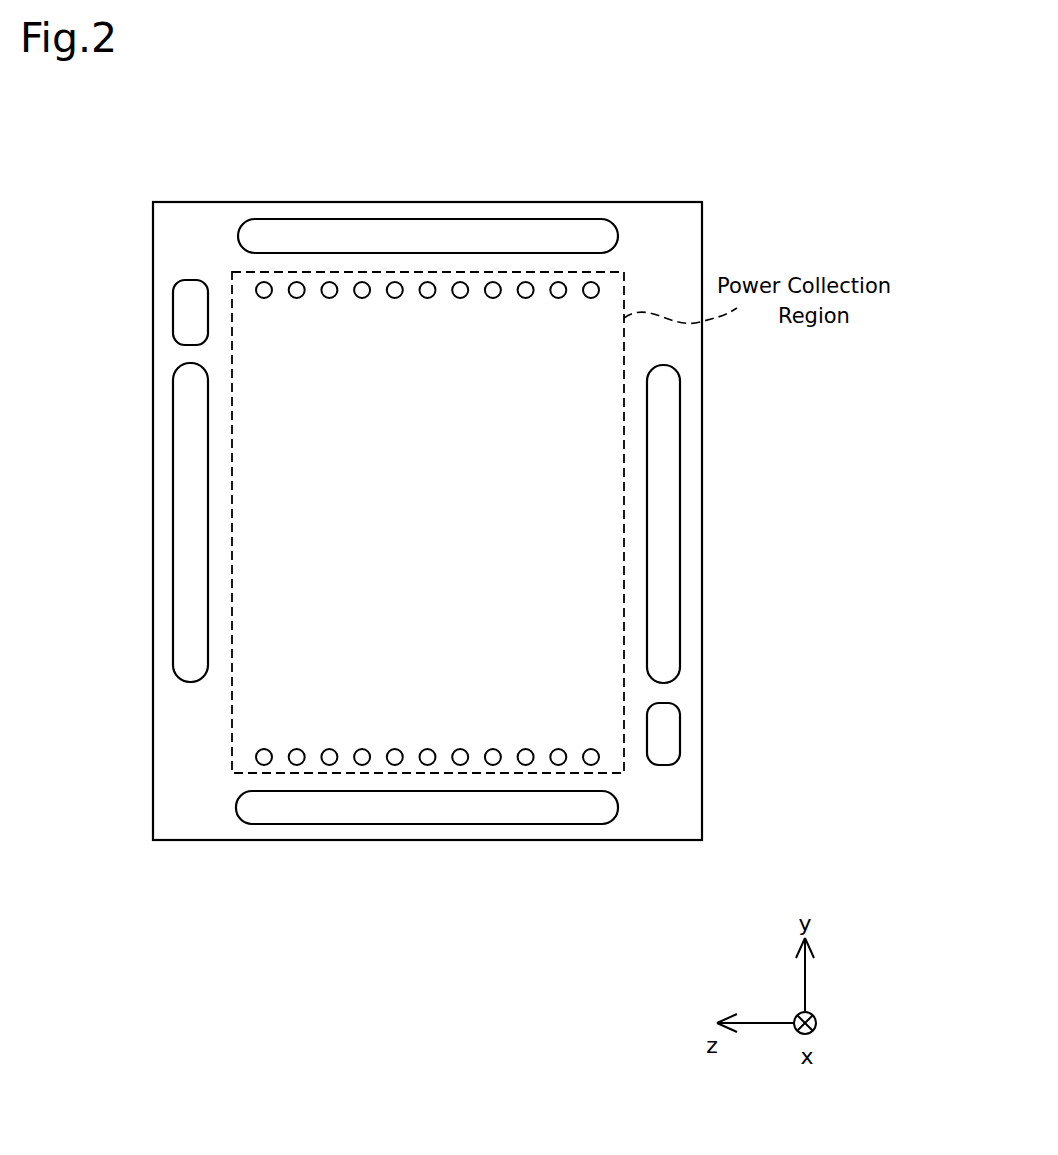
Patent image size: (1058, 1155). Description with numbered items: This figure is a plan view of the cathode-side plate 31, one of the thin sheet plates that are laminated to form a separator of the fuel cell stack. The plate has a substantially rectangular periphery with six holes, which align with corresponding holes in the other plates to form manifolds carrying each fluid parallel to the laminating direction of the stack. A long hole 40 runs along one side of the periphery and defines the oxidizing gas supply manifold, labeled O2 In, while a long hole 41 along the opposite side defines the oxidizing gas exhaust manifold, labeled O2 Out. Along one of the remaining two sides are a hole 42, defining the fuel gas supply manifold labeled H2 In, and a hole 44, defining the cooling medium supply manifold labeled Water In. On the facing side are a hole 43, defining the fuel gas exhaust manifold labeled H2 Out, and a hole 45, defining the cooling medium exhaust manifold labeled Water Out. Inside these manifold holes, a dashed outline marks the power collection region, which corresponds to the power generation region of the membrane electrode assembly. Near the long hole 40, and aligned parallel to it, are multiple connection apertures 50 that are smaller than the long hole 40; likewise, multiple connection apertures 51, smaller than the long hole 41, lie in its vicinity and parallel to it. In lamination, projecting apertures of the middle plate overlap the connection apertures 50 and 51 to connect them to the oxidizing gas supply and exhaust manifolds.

The cathode-side plate 31 is at (665, 162).
The long hole 40 is at (275, 232).
The long hole 41 is at (288, 814).
The hole 42 is at (185, 292).
The hole 43 is at (668, 704).
The hole 44 is at (185, 417).
The hole 45 is at (670, 403).
The connection apertures 50 is at (395, 298).
The connection apertures 51 is at (426, 749).